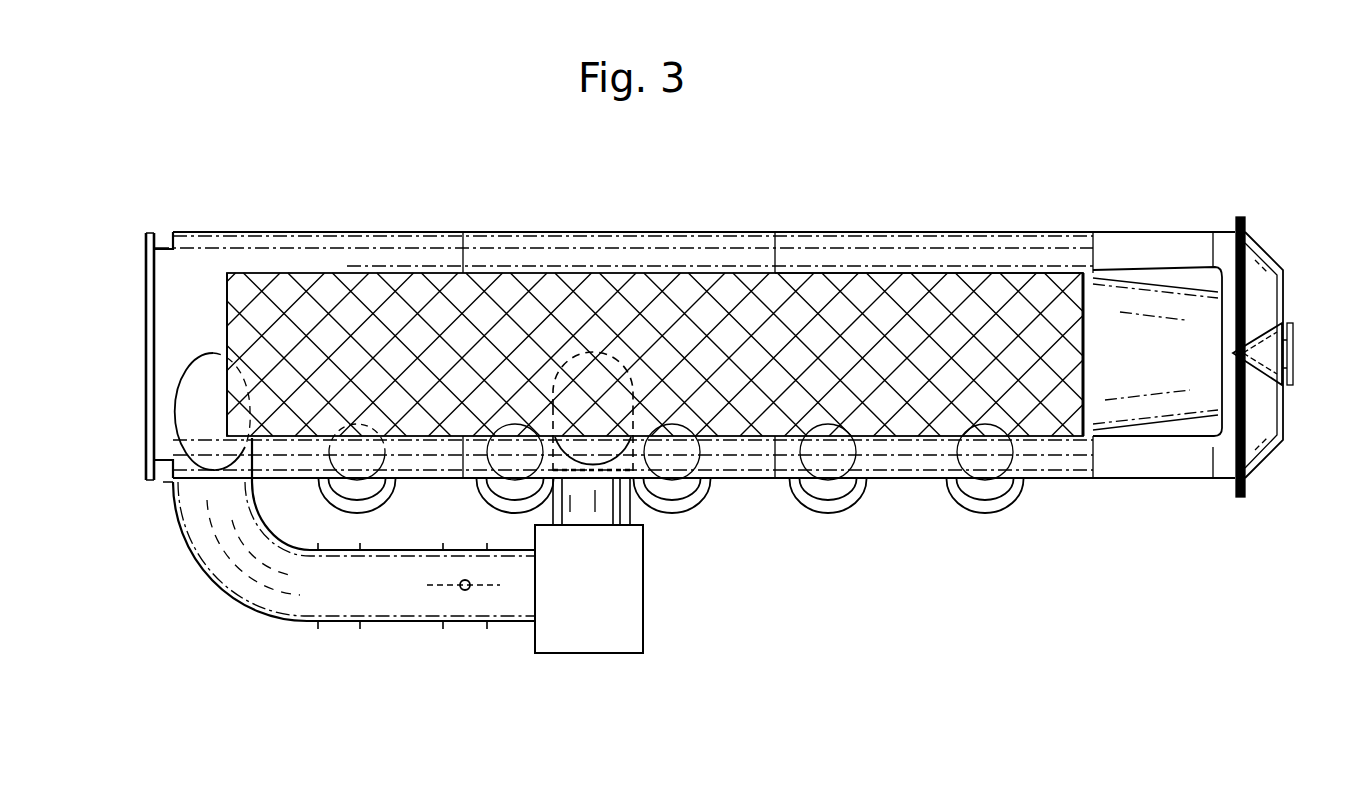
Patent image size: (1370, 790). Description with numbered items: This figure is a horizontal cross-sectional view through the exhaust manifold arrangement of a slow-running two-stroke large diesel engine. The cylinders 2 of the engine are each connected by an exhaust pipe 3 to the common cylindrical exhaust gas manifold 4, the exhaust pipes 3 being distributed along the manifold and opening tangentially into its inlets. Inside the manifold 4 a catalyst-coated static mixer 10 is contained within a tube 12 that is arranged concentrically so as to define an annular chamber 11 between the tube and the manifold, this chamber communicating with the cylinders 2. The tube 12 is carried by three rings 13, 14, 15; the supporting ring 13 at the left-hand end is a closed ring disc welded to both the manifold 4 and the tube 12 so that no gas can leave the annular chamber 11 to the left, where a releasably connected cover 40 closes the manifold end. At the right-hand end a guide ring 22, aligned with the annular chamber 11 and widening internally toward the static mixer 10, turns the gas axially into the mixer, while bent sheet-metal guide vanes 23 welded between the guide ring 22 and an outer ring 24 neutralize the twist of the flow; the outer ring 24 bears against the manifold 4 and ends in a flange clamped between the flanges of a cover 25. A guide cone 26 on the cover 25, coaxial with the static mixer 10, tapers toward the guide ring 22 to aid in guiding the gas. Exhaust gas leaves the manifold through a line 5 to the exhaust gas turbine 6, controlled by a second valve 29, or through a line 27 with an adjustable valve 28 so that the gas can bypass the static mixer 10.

The cylinder 2 is at (840, 508).
The exhaust pipe 3 is at (812, 488).
The exhaust gas manifold 4 is at (697, 229).
The line 5 is at (277, 607).
The exhaust gas turbine 6 is at (572, 630).
The static mixer 10 is at (938, 272).
The annular chamber 11 is at (570, 253).
The tube 12 is at (830, 272).
The supporting ring 13 is at (253, 273).
The ring 14 is at (466, 272).
The ring 15 is at (780, 231).
The guide ring 22 is at (1247, 229).
The guide vanes 23 is at (1150, 247).
The outer ring 24 is at (1212, 478).
The cover 25 is at (1278, 455).
The guide cone 26 is at (1287, 316).
The line 27 is at (633, 513).
The adjustable valve 28 is at (497, 507).
The second valve 29 is at (460, 589).
The cover 40 is at (147, 355).